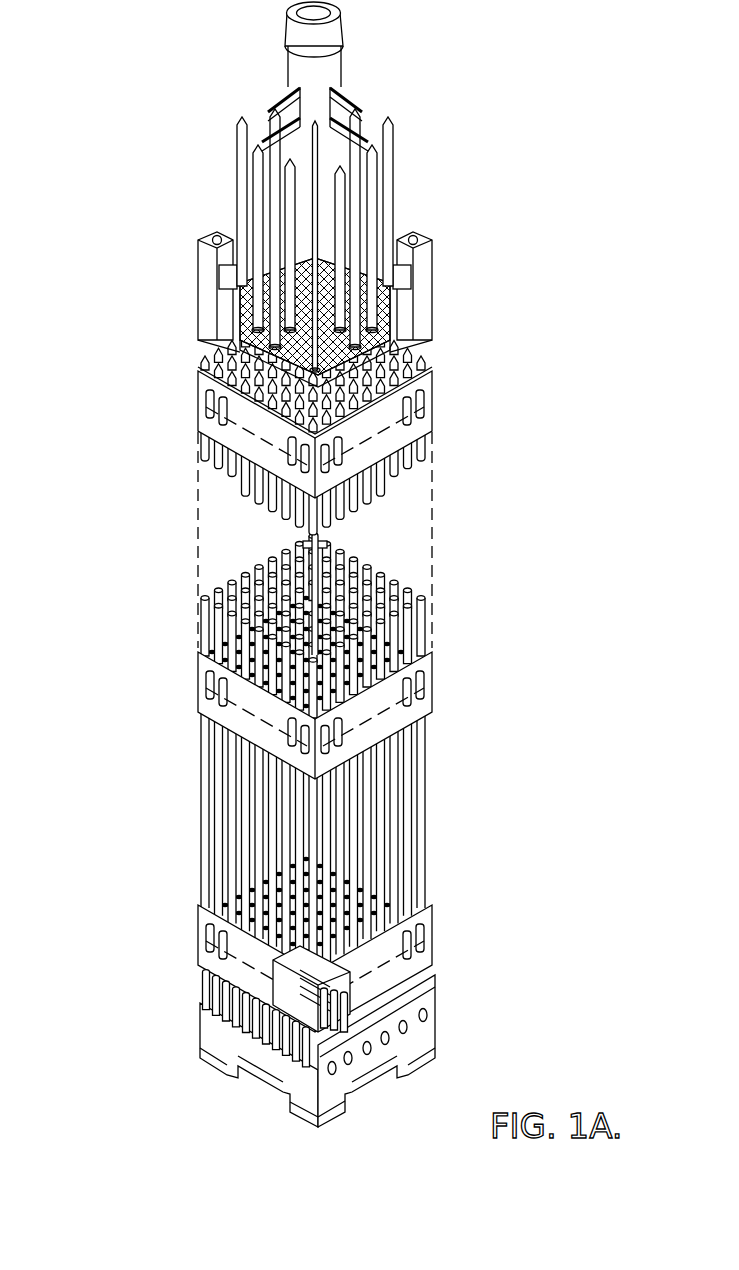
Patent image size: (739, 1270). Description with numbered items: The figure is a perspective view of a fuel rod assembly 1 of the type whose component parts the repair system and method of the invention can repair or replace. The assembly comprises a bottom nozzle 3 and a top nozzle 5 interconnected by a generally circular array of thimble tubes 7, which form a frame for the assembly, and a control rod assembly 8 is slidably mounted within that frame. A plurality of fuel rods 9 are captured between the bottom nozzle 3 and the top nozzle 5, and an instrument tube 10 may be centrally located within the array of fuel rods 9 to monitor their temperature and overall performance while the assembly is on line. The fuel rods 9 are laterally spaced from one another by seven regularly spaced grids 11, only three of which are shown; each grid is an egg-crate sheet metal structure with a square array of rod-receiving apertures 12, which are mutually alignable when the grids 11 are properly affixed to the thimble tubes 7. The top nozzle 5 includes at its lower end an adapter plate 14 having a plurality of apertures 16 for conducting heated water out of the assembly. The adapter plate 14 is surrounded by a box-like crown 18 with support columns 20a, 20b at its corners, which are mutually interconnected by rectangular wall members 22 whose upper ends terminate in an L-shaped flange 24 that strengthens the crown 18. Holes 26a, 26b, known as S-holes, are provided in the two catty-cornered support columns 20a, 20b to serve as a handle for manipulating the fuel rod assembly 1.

The fuel rod assembly 1 is at (112, 216).
The bottom nozzle 3 is at (437, 1027).
The top nozzle 5 is at (420, 297).
The thimble tubes 7 is at (313, 520).
The control rod assembly 8 is at (337, 66).
The fuel rods 9 is at (423, 598).
The instrument tube 10 is at (323, 533).
The grids 11 is at (433, 396).
The rod-receiving apertures 12 is at (235, 665).
The adapter plate 14 is at (262, 362).
The apertures 16 is at (243, 393).
The box-like crown 18 is at (205, 307).
The support column 20a is at (206, 256).
The support column 20b is at (418, 262).
The rectangular wall members 22 is at (240, 347).
The L-shaped flange 24 is at (235, 292).
The hole 26a is at (217, 234).
The hole 26b is at (412, 234).